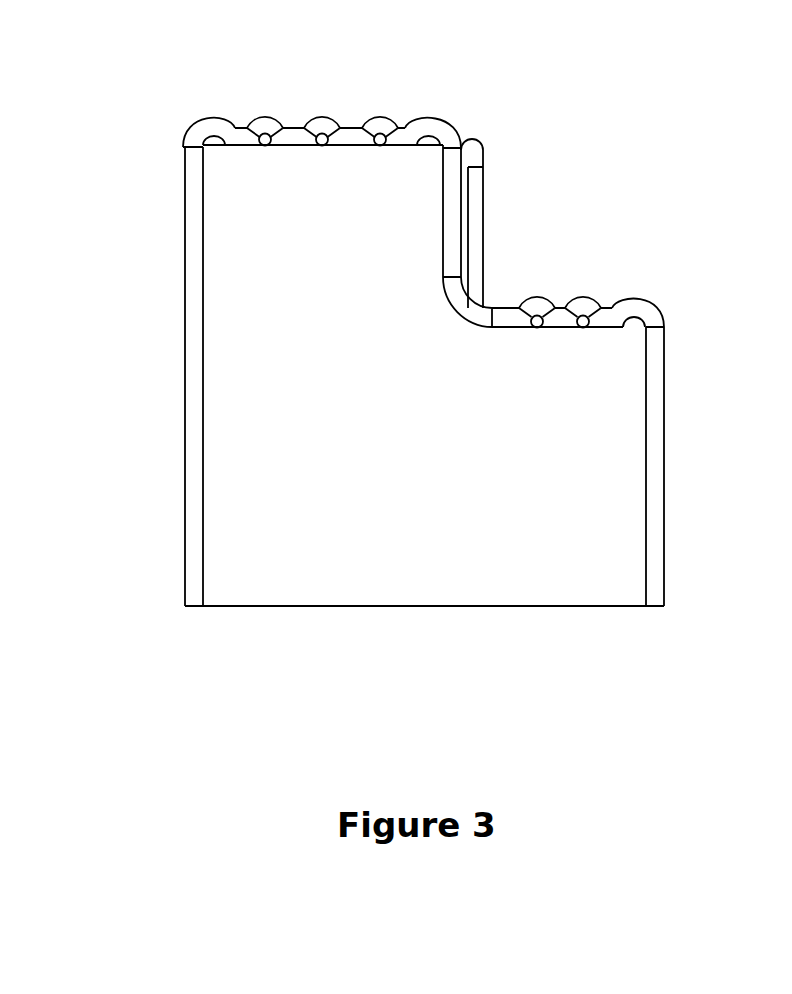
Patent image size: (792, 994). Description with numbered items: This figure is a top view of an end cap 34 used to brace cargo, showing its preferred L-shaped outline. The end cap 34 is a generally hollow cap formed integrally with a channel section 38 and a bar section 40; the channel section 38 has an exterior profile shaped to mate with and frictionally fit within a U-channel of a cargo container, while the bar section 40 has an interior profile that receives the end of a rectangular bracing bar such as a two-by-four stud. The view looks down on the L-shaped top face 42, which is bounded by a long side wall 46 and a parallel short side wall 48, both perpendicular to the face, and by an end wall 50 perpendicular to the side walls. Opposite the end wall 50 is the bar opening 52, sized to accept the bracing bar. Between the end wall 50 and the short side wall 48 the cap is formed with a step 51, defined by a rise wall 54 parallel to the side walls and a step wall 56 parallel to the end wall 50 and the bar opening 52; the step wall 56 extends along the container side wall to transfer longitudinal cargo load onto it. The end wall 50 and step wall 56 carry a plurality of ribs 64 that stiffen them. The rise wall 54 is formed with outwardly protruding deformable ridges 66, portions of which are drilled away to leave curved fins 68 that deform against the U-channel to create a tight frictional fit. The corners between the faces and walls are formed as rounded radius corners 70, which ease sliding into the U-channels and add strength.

The end cap 34 is at (449, 363).
The channel section 38 is at (329, 263).
The bar section 40 is at (447, 497).
The top face 42 is at (298, 590).
The long side wall 46 is at (197, 400).
The short side wall 48 is at (652, 483).
The end wall 50 is at (289, 131).
The step 51 is at (500, 297).
The bar opening 52 is at (513, 607).
The rise wall 54 is at (452, 172).
The step wall 56 is at (510, 323).
The ribs 64 is at (579, 299).
The deformable ridges 66 is at (465, 197).
The curved fins 68 is at (480, 228).
The rounded radius corners 70 is at (649, 305).